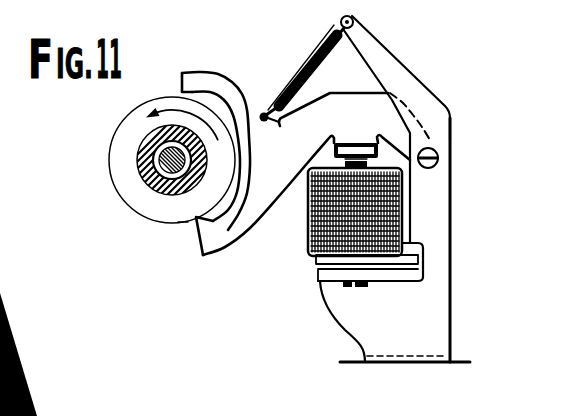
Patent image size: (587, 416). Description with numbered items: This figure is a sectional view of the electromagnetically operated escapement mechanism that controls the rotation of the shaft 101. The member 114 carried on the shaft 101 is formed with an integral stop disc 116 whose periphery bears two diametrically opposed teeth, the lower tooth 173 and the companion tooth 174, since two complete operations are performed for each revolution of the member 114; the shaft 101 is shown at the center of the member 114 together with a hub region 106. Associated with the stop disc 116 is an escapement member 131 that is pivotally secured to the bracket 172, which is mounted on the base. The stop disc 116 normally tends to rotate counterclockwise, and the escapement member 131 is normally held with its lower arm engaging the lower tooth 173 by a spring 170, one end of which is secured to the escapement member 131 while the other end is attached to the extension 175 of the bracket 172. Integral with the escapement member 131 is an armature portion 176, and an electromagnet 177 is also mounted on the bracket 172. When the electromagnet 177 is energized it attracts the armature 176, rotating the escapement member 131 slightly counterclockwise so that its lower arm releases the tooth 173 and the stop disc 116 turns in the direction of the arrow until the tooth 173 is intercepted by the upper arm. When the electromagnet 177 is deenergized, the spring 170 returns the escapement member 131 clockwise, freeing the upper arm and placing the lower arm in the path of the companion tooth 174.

The shaft 101 is at (160, 172).
The hub 106 is at (154, 159).
The member 114 is at (146, 139).
The stop disc 116 is at (127, 119).
The escapement member 131 is at (248, 234).
The spring 170 is at (327, 37).
The bracket 172 is at (456, 272).
The lower tooth 173 is at (183, 223).
The companion tooth 174 is at (182, 92).
The extension 175 is at (368, 30).
The armature portion 176 is at (379, 149).
The electromagnet 177 is at (403, 193).